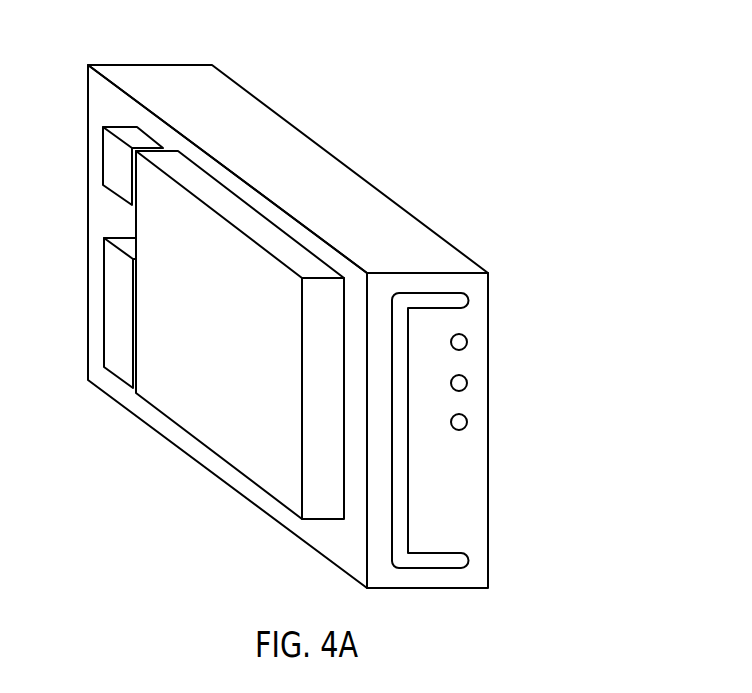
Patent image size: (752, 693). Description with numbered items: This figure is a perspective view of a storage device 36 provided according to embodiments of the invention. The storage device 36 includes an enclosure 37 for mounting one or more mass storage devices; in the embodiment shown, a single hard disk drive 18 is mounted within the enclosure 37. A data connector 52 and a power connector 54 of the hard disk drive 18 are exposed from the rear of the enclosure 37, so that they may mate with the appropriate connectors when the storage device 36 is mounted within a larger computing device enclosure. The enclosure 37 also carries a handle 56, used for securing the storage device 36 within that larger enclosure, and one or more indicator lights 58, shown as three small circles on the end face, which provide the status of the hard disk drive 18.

The storage device 36 is at (472, 107).
The enclosure 37 is at (302, 151).
The hard disk drive 18 is at (215, 430).
The data connector 52 is at (117, 307).
The power connector 54 is at (110, 150).
The handle 56 is at (440, 563).
The indicator lights 58 is at (467, 342).